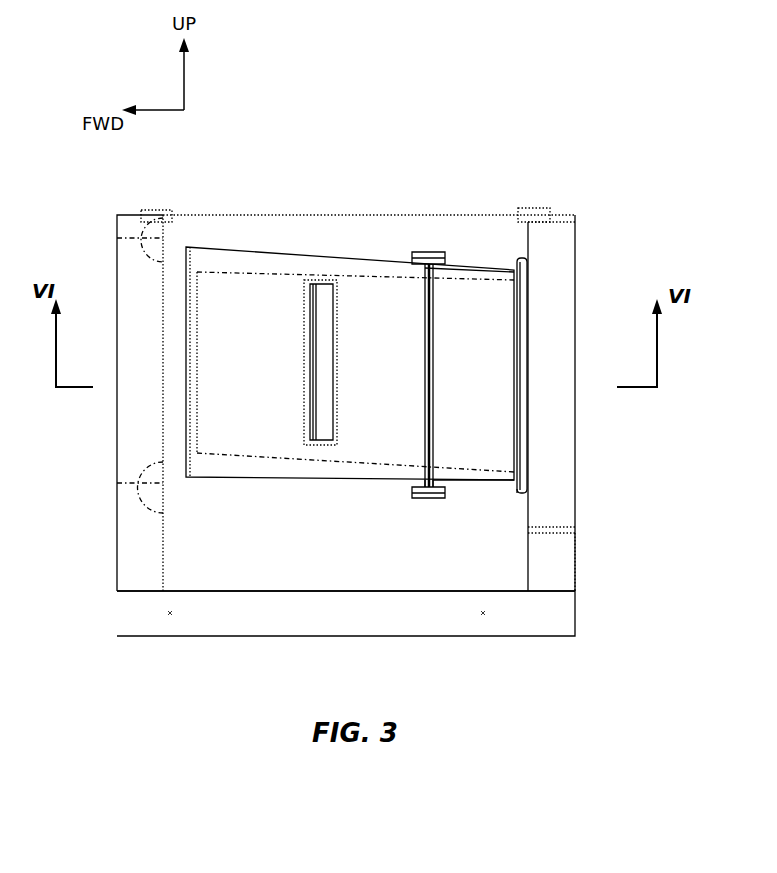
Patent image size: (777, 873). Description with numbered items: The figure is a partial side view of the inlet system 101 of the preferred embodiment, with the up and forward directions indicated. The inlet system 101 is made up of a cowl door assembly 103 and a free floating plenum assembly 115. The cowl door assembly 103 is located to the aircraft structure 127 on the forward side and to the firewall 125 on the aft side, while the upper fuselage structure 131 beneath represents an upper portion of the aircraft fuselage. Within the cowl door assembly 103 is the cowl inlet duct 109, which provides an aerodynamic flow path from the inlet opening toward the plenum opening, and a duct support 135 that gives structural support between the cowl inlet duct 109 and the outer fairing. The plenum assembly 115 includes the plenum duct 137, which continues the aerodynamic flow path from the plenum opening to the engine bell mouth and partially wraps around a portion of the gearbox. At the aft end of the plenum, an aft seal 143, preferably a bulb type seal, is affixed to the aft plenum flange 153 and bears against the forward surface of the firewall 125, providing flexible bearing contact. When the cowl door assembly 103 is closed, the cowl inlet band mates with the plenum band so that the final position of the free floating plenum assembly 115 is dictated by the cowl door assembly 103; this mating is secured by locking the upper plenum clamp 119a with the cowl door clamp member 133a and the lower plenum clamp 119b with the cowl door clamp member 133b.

The inlet system 101 is at (403, 126).
The cowl door assembly 103 is at (258, 503).
The cowl inlet duct 109 is at (277, 252).
The plenum assembly 115 is at (503, 511).
The upper plenum clamp 119a is at (436, 252).
The lower plenum clamp 119b is at (437, 500).
The firewall 125 is at (573, 490).
The aircraft structure 127 is at (117, 552).
The upper fuselage structure 131 is at (507, 636).
The cowl door clamp member 133a is at (418, 252).
The cowl door clamp member 133b is at (420, 500).
The duct support 135 is at (313, 420).
The plenum duct 137 is at (487, 270).
The aft seal 143 is at (527, 258).
The aft plenum flange 153 is at (517, 493).